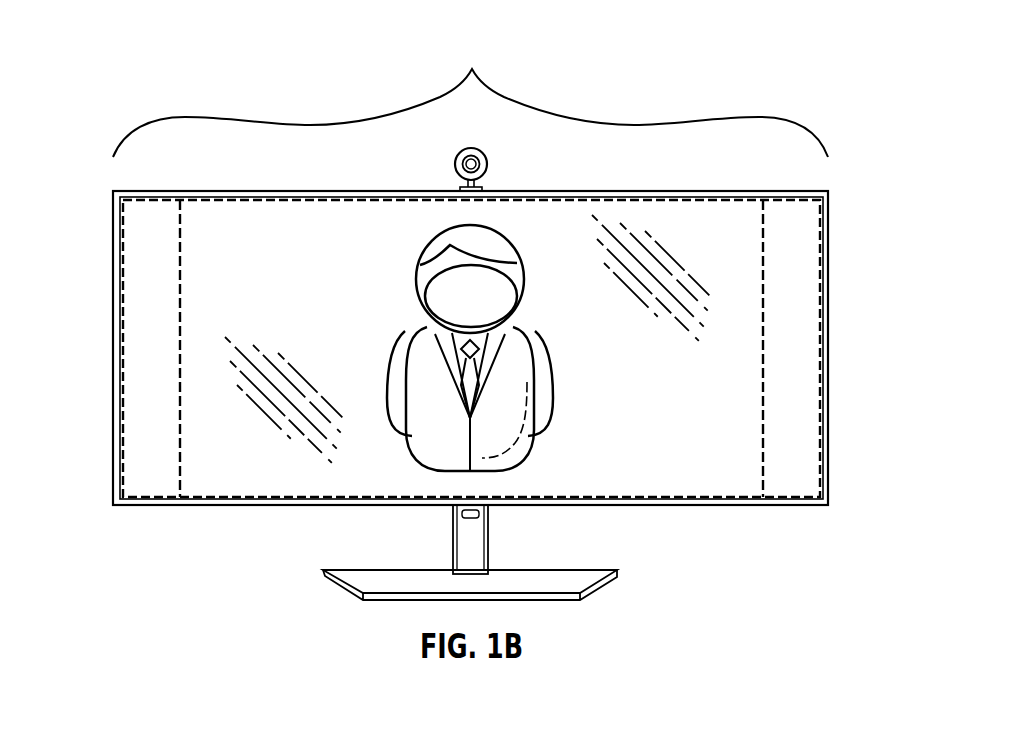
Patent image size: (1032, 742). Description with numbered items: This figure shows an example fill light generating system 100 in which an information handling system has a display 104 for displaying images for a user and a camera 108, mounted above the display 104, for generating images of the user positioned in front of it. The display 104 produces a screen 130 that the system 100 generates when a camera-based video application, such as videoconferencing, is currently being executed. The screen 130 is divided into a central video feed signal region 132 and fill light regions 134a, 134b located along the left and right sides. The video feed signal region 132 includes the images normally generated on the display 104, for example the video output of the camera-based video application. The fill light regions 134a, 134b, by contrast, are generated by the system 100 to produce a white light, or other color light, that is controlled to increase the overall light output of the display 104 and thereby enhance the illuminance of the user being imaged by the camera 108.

The fill light generating system 100 is at (746, 34).
The screen 130 is at (470, 94).
The display 104 is at (245, 174).
The camera 108 is at (489, 167).
The video feed signal region 132 is at (744, 246).
The fill light region 134a is at (135, 357).
The fill light region 134b is at (808, 325).